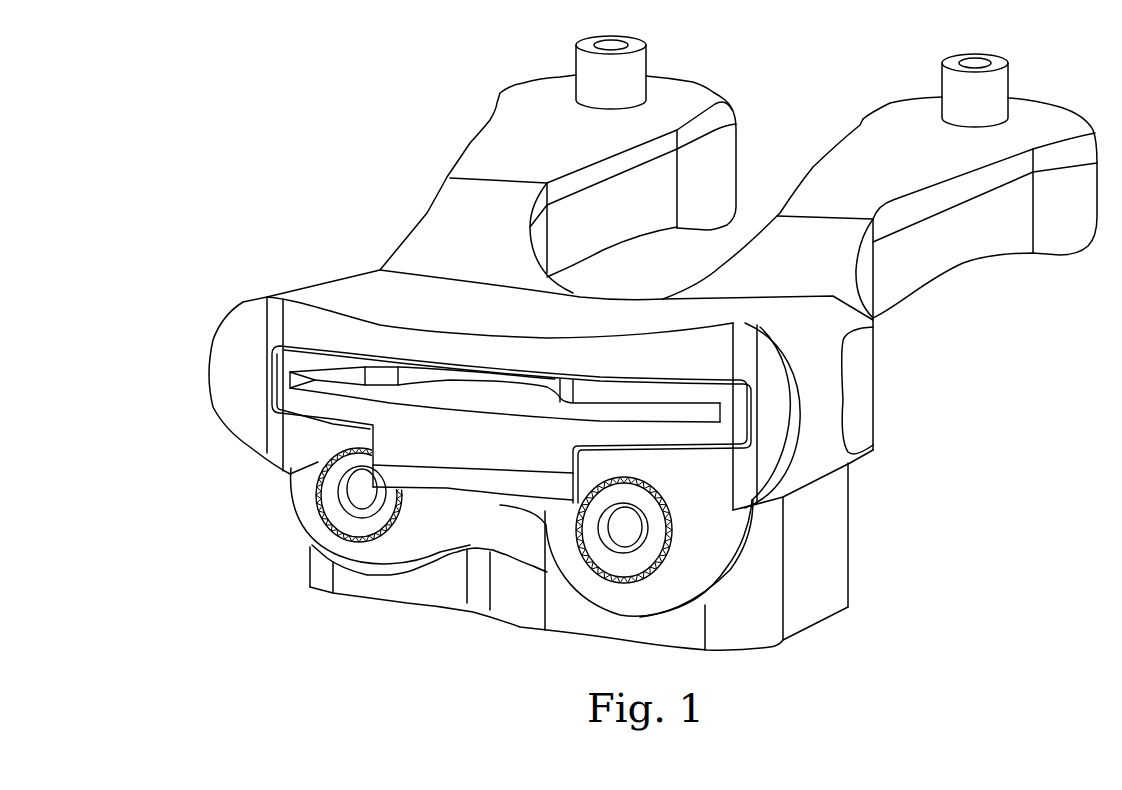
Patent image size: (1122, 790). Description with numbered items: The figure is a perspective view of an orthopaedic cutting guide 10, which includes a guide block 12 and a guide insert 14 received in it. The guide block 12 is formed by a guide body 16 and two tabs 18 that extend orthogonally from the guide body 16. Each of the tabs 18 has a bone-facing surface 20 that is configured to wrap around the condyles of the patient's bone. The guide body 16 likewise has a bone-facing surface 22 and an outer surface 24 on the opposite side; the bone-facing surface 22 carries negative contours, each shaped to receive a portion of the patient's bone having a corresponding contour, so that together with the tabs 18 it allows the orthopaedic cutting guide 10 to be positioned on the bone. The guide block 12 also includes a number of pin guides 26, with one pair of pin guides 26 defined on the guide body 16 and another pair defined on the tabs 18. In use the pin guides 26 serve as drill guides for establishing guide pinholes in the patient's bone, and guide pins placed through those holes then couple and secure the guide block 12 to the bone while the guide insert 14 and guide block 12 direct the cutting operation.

The orthopaedic cutting guide 10 is at (288, 124).
The guide block 12 is at (311, 226).
The guide insert 14 is at (731, 412).
The guide body 16 is at (310, 294).
The tabs 18 is at (498, 136).
The bone-facing surfaces 20 is at (953, 272).
The bone-facing surface 22 is at (850, 504).
The outer surface 24 is at (300, 326).
The pin guides 26 is at (1010, 83).